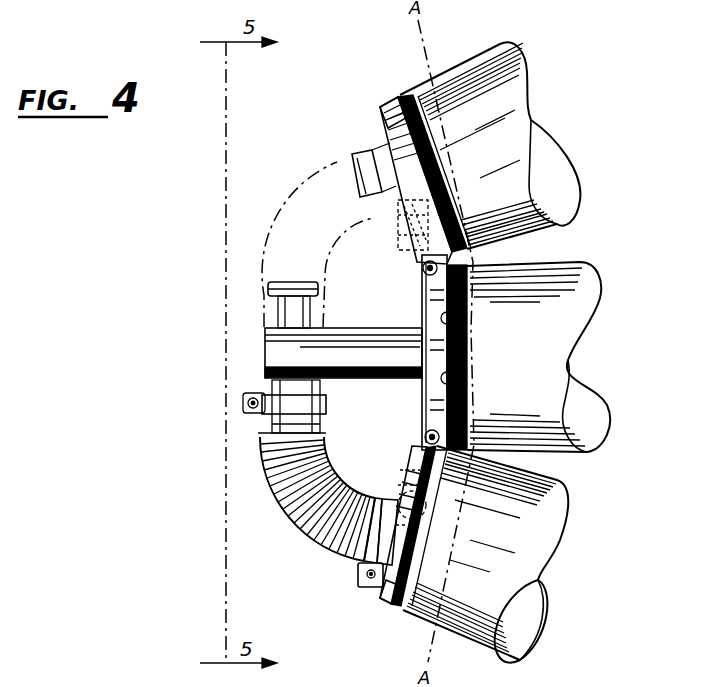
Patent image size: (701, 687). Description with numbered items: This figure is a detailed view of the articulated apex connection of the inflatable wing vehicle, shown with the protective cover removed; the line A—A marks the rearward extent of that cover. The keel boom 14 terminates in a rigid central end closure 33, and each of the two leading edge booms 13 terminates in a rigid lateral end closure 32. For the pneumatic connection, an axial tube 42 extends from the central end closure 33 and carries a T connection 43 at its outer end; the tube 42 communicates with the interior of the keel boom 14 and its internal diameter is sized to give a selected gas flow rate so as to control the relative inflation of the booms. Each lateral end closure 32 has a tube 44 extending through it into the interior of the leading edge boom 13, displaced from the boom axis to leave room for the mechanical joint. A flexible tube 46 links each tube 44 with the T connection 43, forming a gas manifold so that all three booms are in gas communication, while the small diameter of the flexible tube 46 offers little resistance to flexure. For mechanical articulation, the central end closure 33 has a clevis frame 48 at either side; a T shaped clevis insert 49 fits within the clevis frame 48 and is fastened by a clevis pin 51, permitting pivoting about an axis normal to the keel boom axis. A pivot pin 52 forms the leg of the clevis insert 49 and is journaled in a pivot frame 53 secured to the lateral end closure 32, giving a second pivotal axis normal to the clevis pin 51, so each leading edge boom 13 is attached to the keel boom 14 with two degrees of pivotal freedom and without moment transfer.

The leading edge boom 13 is at (566, 182).
The keel boom 14 is at (590, 318).
The lateral end closure 32 is at (390, 100).
The central end closure 33 is at (422, 397).
The axial tube 42 is at (343, 353).
The T connection 43 is at (290, 310).
The tube 44 is at (358, 155).
The flexible tube 46 is at (335, 152).
The clevis frame 48 is at (422, 416).
The clevis insert 49 is at (421, 268).
The clevis pin 51 is at (424, 276).
The pivot pin 52 is at (398, 243).
The pivot frame 53 is at (396, 251).